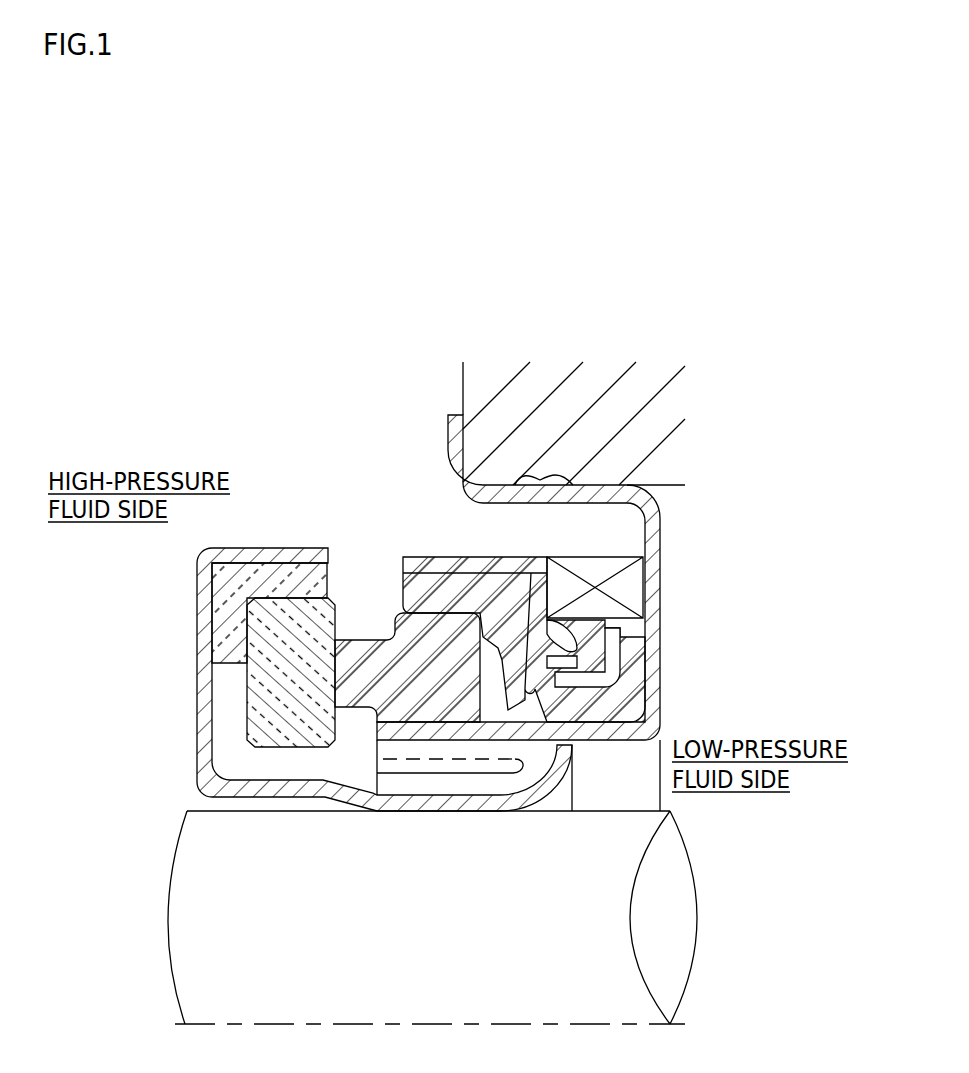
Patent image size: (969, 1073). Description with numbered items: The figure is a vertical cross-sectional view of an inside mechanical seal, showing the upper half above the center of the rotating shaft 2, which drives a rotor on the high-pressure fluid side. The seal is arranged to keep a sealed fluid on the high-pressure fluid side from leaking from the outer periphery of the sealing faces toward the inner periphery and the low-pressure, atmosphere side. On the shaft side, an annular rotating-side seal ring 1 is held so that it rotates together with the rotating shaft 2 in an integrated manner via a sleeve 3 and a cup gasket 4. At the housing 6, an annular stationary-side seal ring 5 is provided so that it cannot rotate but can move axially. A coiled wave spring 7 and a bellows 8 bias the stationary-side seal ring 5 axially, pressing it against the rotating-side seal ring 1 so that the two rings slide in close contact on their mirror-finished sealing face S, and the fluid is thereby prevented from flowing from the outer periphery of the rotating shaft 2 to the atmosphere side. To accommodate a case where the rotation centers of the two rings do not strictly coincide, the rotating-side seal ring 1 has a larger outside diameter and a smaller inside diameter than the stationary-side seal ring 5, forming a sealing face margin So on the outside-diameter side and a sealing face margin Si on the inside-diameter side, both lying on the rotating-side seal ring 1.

The rotating-side seal ring 1 is at (278, 740).
The rotating shaft 2 is at (505, 998).
The sleeve 3 is at (199, 664).
The cup gasket 4 is at (276, 580).
The stationary-side seal ring 5 is at (457, 690).
The housing 6 is at (586, 382).
The coiled wave spring 7 is at (628, 582).
The bellows 8 is at (487, 590).
The sealing face S is at (337, 672).
The sealing face margin on the inside-diameter side Si is at (335, 705).
The sealing face margin on the outside-diameter side So is at (337, 628).